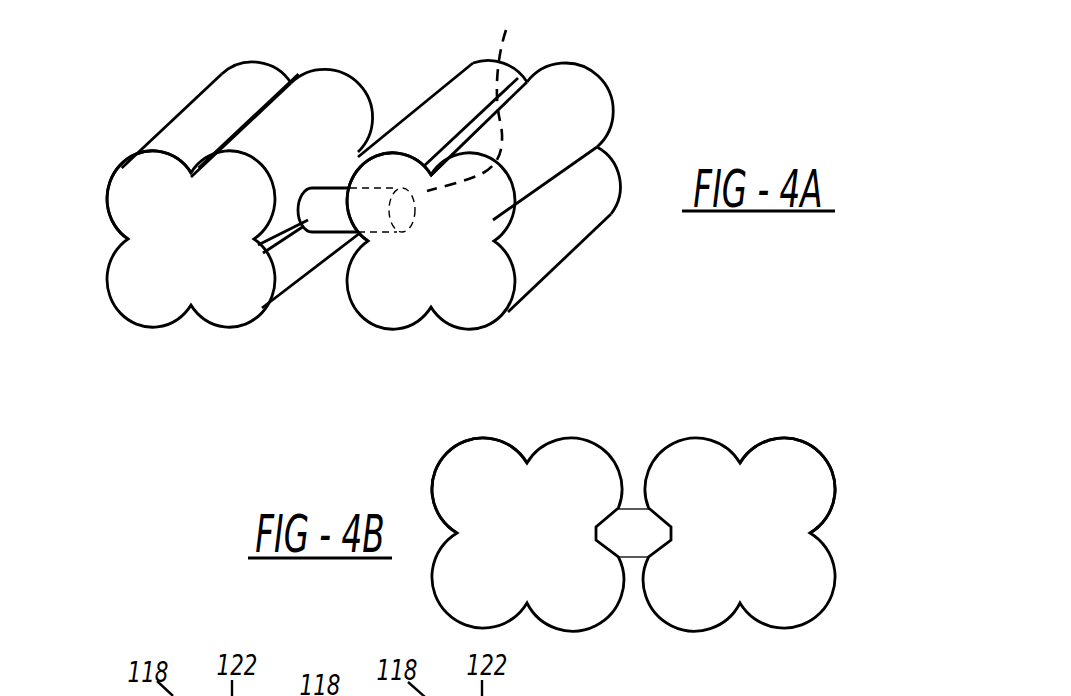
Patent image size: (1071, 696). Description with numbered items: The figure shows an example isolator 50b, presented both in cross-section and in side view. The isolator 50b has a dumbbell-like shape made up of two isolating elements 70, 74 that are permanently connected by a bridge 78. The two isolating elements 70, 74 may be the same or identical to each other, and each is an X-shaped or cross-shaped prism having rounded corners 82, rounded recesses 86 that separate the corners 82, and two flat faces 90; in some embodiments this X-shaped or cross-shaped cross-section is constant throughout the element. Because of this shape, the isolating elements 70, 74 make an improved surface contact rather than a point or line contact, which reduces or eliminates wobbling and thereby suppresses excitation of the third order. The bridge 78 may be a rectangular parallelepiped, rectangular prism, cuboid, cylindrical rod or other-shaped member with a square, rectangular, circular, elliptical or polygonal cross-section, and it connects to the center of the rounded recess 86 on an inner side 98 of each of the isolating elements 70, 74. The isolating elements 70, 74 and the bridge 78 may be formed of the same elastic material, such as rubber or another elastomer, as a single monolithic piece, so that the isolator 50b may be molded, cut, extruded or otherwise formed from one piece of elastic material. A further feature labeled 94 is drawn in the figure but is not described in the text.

In FIG. 4A, the isolator 50b is at (665, 51).
In FIG. 4B, the isolator 50b is at (808, 378).
In FIG. 4A, the isolating element 70 is at (181, 81).
In FIG. 4B, the isolating element 70 is at (478, 418).
In FIG. 4A, the isolating element 74 is at (598, 118).
In FIG. 4B, the isolating element 74 is at (818, 500).
In FIG. 4A, the bridge 78 is at (325, 217).
In FIG. 4B, the bridge 78 is at (630, 520).
In FIG. 4A, the rounded corners 82 is at (255, 62).
In FIG. 4B, the rounded corners 82 is at (452, 446).
In FIG. 4A, the rounded recesses 86 is at (128, 240).
In FIG. 4B, the rounded recesses 86 is at (528, 455).
In FIG. 4A, the flat faces 90 is at (172, 288).
In FIG. 4B, the flat faces 90 is at (507, 554).
In FIG. 4A, the bore 94 is at (507, 42).
In FIG. 4A, the inner side 98 is at (282, 260).